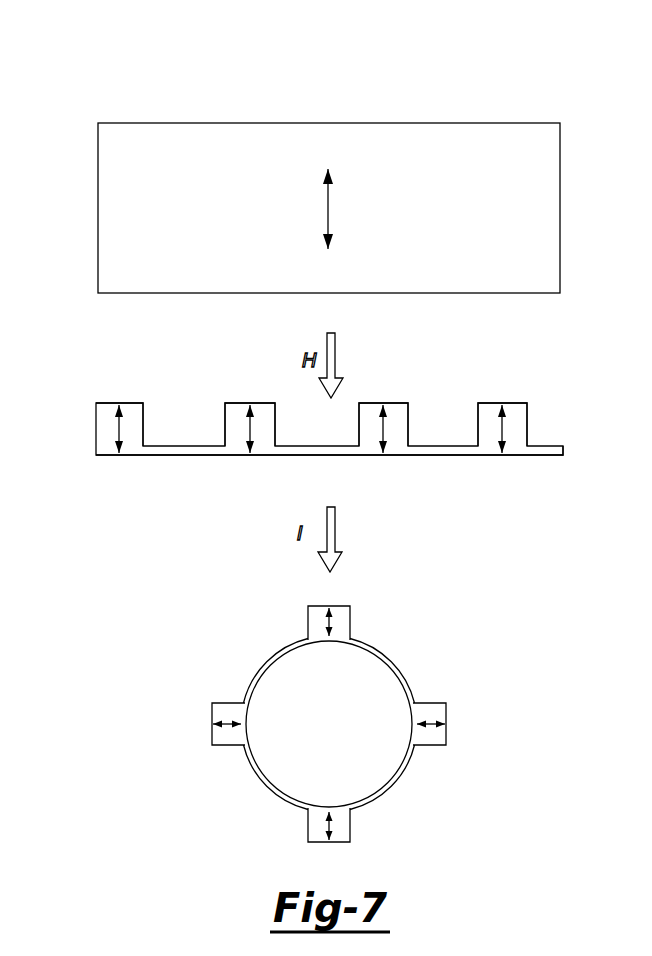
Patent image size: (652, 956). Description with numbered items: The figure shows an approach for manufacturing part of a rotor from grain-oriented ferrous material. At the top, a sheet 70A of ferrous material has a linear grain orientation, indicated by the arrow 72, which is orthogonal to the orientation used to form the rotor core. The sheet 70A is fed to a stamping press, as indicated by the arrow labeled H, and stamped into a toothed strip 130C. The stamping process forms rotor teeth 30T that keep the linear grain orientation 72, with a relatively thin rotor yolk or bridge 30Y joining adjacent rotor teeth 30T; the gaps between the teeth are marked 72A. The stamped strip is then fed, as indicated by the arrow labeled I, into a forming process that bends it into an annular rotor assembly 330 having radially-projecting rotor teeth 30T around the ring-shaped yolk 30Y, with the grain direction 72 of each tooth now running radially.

The sheet 70A is at (328, 123).
The linear grain orientation arrow 72 is at (328, 210).
The spacing between teeth 72A is at (502, 430).
The flat toothed strip 130C is at (528, 366).
The rotor teeth 30T is at (119, 403).
The rotor yolk or bridge 30Y is at (185, 456).
The annular rotor assembly 330 is at (445, 628).